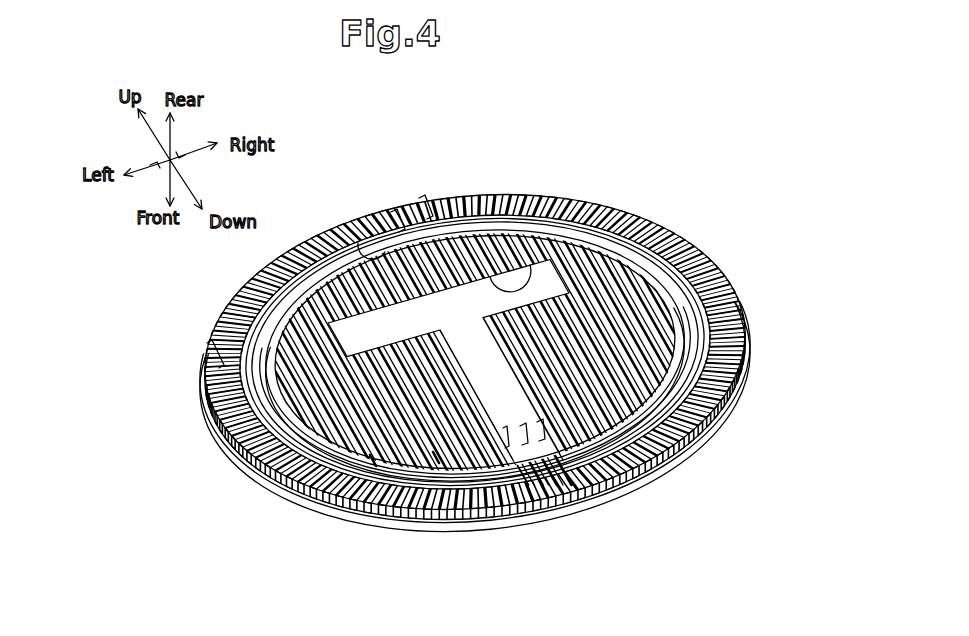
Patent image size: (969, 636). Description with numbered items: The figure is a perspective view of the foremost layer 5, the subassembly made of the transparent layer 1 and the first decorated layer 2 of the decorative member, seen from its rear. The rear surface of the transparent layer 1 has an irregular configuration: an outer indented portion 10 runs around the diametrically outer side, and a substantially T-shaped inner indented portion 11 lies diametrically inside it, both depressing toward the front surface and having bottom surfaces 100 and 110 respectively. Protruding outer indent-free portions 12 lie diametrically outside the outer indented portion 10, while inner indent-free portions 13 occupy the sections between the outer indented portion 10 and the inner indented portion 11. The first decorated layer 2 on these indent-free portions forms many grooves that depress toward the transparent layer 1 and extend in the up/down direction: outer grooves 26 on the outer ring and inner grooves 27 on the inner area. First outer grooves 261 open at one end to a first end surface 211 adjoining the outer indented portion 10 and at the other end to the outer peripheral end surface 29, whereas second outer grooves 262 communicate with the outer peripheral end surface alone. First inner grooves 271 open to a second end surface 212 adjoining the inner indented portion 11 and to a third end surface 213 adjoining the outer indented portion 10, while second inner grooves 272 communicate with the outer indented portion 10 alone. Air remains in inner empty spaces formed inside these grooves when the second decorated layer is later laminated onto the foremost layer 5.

The transparent layer 1 is at (669, 454).
The first decorated layer 2 is at (535, 192).
The foremost layer 5 is at (266, 499).
The outer indented portion 10 is at (678, 288).
The inner indented portion 11 is at (482, 389).
The outer indent-free portions 12 is at (657, 222).
The inner indent-free portions 13 is at (610, 250).
The outer grooves 26 is at (425, 196).
The first outer grooves 261 is at (411, 167).
The second outer grooves 262 is at (215, 354).
The inner grooves 27 is at (374, 466).
The first inner grooves 271 is at (471, 517).
The second inner grooves 272 is at (399, 519).
The outer peripheral end surface 29 is at (613, 478).
The bottom surface 100 is at (697, 325).
The bottom surface 110 is at (390, 332).
The first end surface 211 is at (352, 238).
The second end surface 212 is at (520, 293).
The third end surface 213 is at (694, 384).